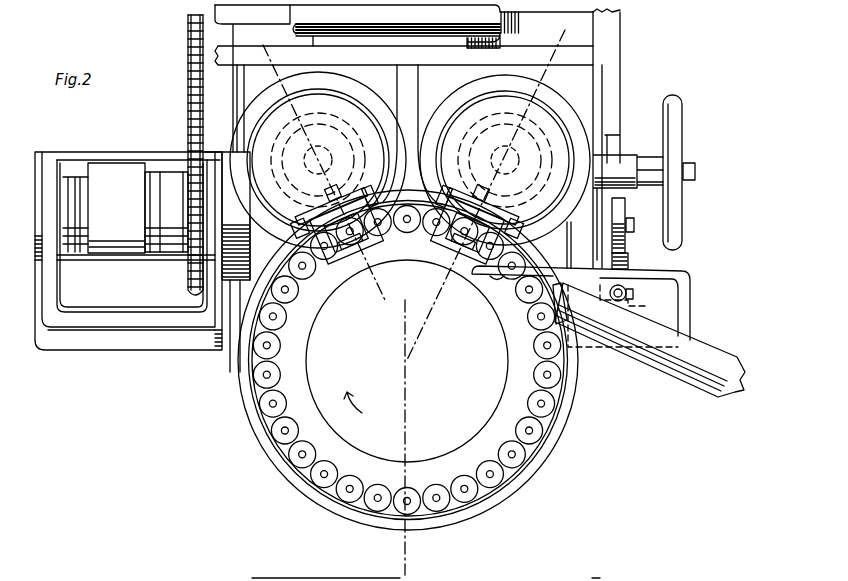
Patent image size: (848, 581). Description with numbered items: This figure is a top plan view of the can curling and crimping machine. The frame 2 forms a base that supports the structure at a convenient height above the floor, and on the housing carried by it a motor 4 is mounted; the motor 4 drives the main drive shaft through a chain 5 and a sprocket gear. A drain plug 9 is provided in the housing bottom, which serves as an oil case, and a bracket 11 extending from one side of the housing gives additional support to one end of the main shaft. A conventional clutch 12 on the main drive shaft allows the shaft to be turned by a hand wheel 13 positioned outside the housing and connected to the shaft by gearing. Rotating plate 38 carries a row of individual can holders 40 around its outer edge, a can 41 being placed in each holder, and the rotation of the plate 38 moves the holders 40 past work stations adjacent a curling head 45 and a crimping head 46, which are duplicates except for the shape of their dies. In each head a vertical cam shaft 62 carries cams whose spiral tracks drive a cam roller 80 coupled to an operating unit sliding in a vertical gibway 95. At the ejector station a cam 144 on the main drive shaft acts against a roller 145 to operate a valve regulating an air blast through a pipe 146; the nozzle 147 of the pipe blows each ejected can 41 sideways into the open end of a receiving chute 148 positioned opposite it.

The frame 2 is at (612, 49).
The motor 4 is at (571, 35).
The chain 5 is at (186, 113).
The drain plug 9 is at (279, 58).
The bracket 11 is at (114, 340).
The clutch 12 is at (115, 252).
The hand wheel 13 is at (672, 217).
The plate 38 is at (527, 453).
The can holder 40 is at (548, 407).
The can 41 is at (464, 480).
The curling head 45 is at (276, 223).
The crimping head 46 is at (554, 216).
The cam shaft 62 is at (410, 160).
The cam roller 80 is at (406, 184).
The gibway 95 is at (410, 218).
The cam 144 is at (622, 212).
The roller 145 is at (627, 258).
The pipe 146 is at (690, 293).
The nozzle 147 is at (497, 291).
The receiving chute 148 is at (720, 398).